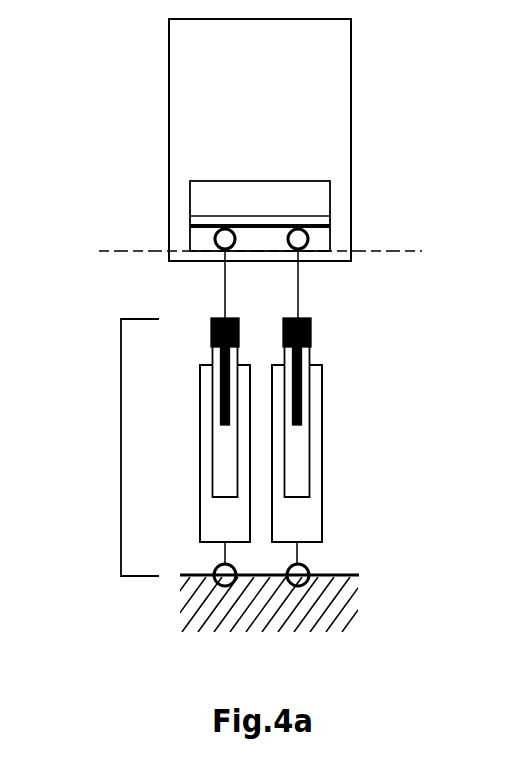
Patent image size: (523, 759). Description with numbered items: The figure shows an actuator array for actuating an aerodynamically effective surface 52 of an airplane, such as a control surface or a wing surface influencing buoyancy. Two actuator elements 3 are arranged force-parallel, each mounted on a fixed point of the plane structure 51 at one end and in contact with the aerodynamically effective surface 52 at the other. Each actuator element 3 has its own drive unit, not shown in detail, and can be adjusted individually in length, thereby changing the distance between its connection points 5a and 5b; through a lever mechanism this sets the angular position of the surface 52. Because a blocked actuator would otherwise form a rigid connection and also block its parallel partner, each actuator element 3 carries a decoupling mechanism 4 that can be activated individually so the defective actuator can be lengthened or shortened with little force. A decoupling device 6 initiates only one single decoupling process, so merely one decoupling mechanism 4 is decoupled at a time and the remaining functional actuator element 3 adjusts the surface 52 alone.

The aerodynamically effective surface 52 is at (318, 71).
The connection point 5a is at (227, 224).
The decoupling mechanism 4 is at (312, 333).
The actuator element 3 is at (233, 508).
The connection point 5b is at (290, 564).
The plane structure 51 is at (343, 613).
The decoupling device 6 is at (121, 433).